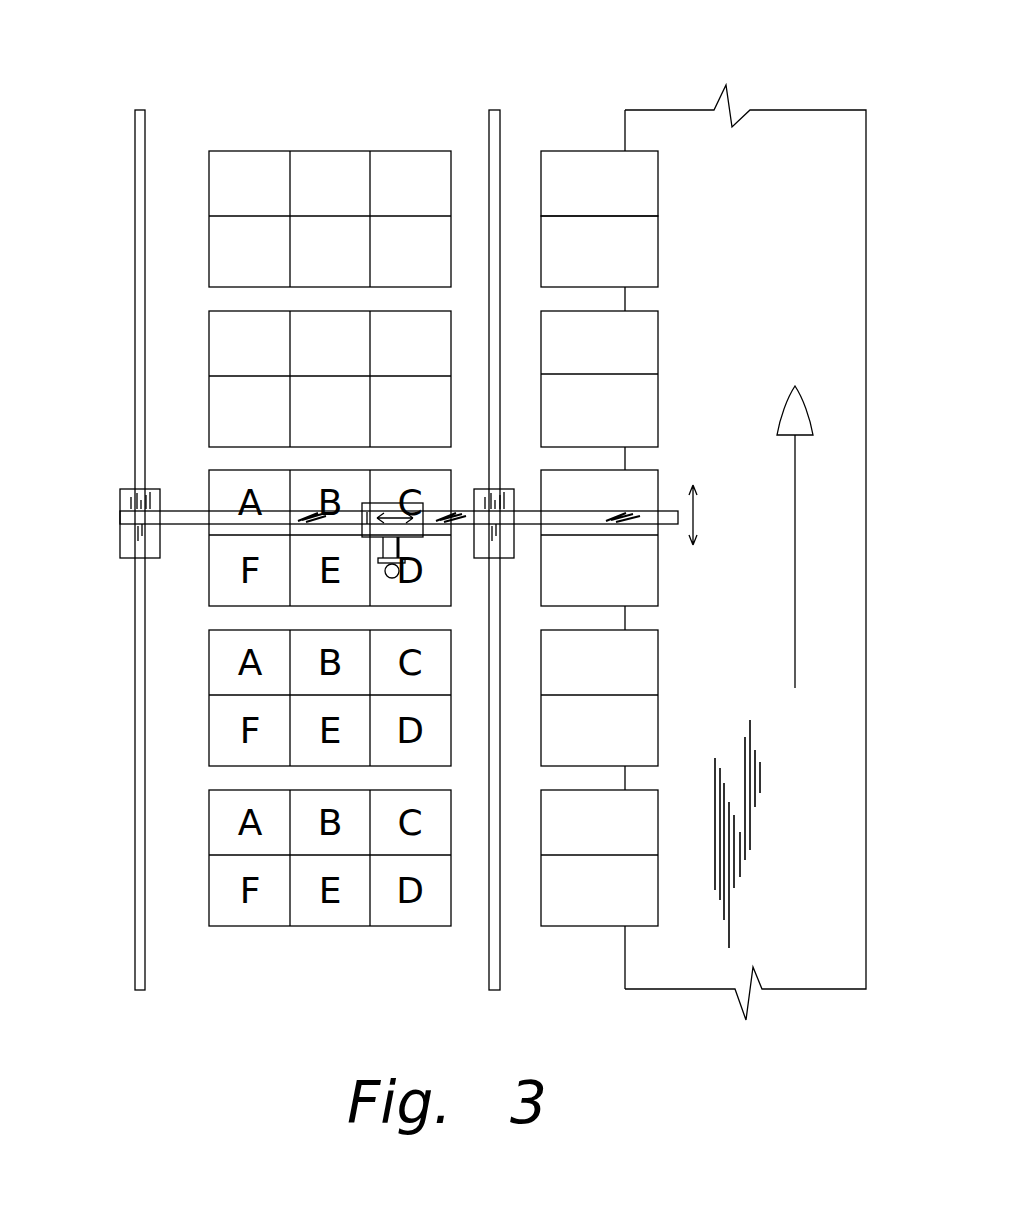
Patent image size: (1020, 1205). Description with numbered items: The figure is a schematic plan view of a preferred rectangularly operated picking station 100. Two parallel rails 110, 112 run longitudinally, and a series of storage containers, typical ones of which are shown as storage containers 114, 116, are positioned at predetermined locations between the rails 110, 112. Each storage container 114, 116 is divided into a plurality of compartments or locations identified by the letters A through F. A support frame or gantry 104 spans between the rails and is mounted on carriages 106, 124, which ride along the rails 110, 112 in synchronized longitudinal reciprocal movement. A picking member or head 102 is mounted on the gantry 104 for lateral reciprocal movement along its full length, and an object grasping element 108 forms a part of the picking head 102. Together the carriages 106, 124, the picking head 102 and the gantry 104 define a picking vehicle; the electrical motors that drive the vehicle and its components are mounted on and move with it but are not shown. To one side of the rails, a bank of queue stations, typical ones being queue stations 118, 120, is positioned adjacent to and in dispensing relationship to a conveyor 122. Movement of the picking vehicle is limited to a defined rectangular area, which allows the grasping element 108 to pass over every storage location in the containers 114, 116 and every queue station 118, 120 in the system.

The rectangularly operated picking station 100 is at (593, 75).
The picking member or head 102 is at (383, 503).
The support frame or gantry 104 is at (166, 524).
The carriage 106 is at (120, 494).
The object grasping element 108 is at (392, 578).
The rail 110 is at (145, 166).
The rail 112 is at (489, 122).
The storage container 114 is at (210, 208).
The storage container 116 is at (209, 340).
The queue station 118 is at (572, 199).
The queue station 120 is at (635, 272).
The conveyor 122 is at (805, 285).
The carriage 124 is at (514, 500).